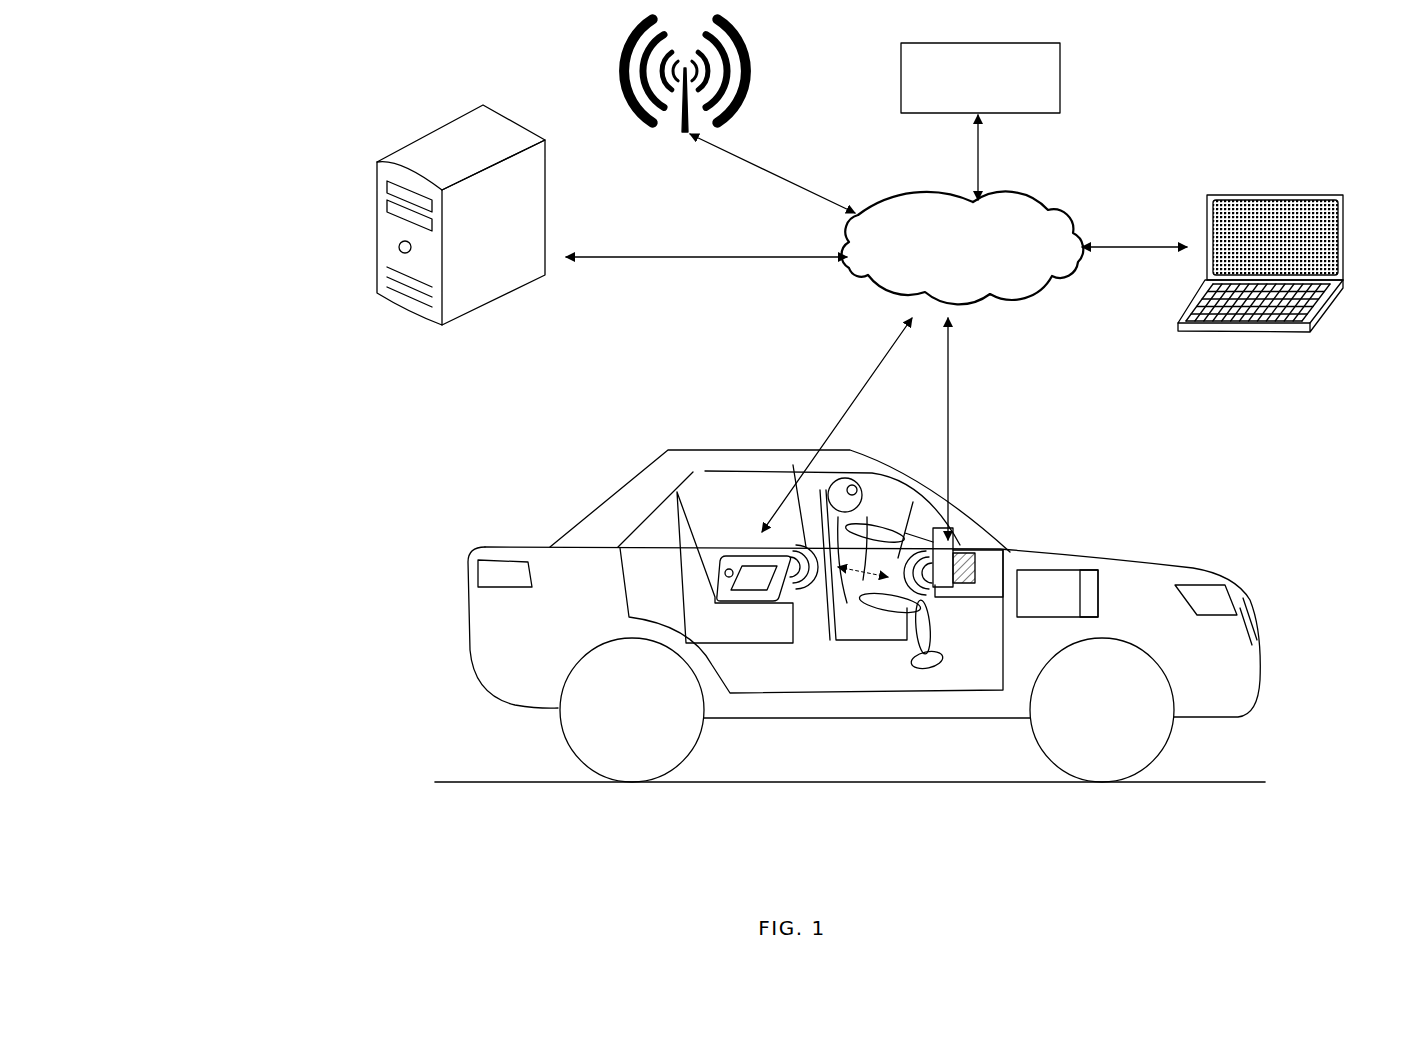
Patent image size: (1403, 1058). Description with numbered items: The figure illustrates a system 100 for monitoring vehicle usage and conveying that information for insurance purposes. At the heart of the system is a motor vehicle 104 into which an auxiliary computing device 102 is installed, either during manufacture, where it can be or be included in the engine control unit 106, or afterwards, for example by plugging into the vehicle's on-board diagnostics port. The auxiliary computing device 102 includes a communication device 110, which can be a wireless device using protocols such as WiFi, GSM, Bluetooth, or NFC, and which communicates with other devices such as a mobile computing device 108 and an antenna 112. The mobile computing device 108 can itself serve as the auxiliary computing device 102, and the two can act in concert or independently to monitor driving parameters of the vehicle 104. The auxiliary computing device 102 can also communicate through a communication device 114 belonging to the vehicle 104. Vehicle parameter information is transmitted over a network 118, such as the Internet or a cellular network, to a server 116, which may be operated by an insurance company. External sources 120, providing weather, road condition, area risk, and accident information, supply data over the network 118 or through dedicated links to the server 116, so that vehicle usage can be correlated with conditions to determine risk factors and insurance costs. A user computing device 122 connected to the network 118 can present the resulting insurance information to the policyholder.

The system 100 is at (281, 138).
The auxiliary computing device 102 is at (953, 548).
The motor vehicle 104 is at (950, 707).
The engine control unit 106 is at (975, 572).
The mobile computing device 108 is at (740, 552).
The communication device 110 is at (943, 588).
The antenna 112 is at (684, 132).
The communication device of the vehicle 114 is at (1098, 590).
The server 116 is at (461, 215).
The network 118 is at (962, 247).
The external sources 120 is at (980, 78).
The user computing device 122 is at (1259, 333).